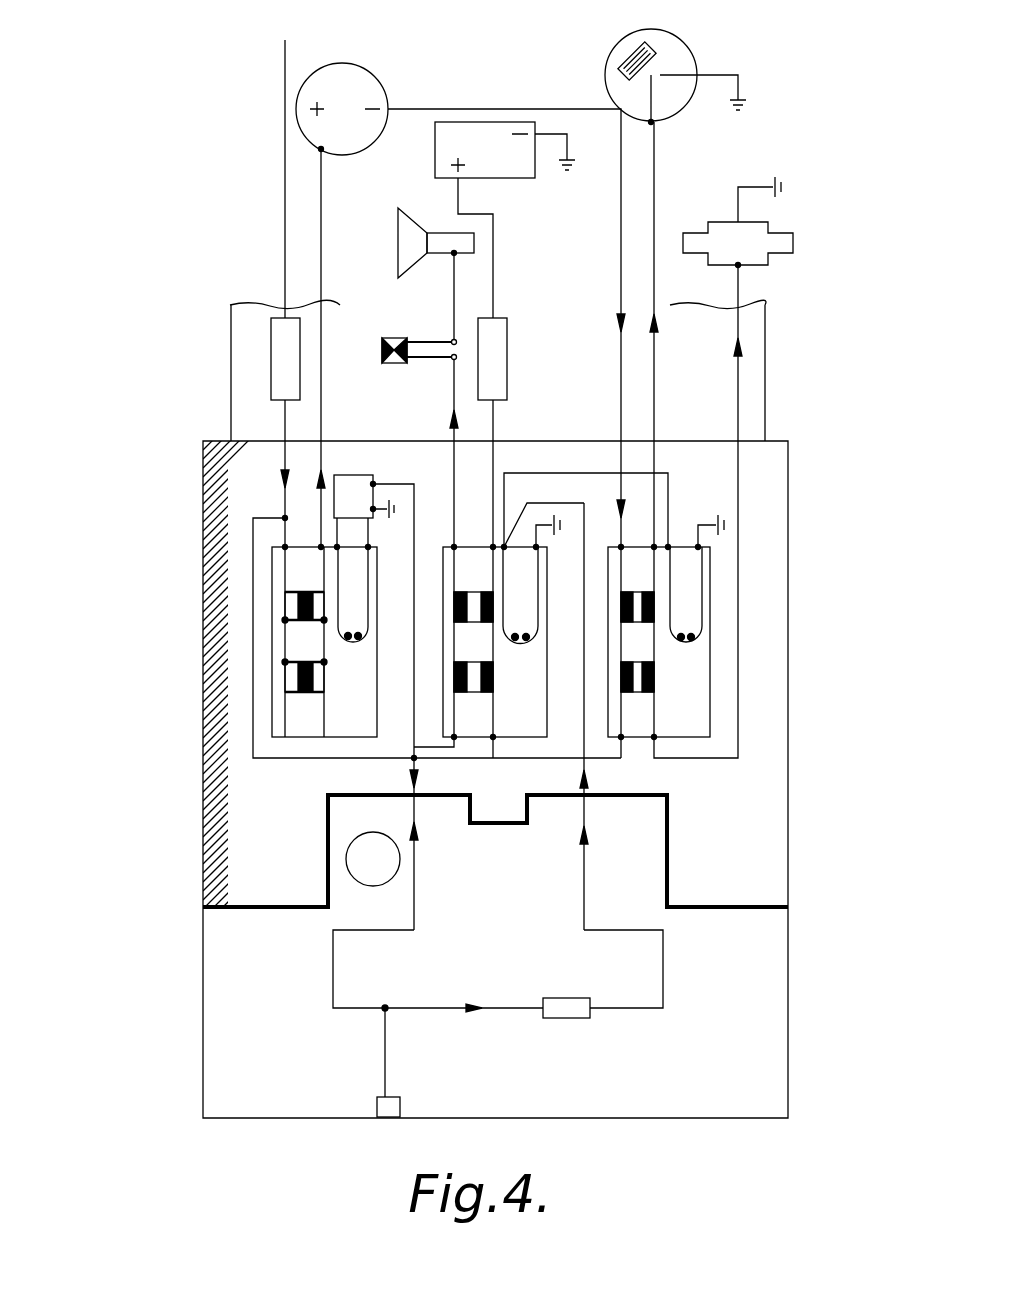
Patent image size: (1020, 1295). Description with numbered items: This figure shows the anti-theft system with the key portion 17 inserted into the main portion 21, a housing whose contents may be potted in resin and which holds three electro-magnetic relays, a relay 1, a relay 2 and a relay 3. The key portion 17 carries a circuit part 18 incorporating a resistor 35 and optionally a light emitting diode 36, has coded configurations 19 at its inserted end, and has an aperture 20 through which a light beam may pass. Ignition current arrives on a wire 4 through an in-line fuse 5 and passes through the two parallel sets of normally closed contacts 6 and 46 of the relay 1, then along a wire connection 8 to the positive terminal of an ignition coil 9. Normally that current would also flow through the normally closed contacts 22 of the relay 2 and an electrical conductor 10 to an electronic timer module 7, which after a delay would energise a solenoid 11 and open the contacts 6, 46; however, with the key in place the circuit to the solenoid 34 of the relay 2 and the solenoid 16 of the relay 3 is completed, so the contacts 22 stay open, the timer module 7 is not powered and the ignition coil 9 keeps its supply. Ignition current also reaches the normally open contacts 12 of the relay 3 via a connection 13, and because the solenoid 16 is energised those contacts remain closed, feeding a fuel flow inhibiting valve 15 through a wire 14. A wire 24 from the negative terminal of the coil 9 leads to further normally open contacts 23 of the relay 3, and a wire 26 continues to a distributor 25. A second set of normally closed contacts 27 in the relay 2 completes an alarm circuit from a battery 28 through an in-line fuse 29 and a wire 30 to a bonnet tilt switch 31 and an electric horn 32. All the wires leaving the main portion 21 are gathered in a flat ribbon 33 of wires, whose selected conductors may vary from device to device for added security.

The relay 1 is at (437, 651).
The relay 2 is at (557, 606).
The relay 3 is at (674, 625).
The wire 4 is at (281, 218).
The in-line fuse 5 is at (300, 360).
The normally closed contacts 6 is at (307, 560).
The electronic timer module 7 is at (360, 478).
The wire connection 8 is at (326, 218).
The ignition coil 9 is at (382, 85).
The electrical conductor 10 is at (414, 612).
The solenoid 11 is at (350, 645).
The normally open contacts 12 is at (640, 683).
The connection 13 is at (520, 762).
The wire 14 is at (738, 378).
The fuel flow inhibiting valve 15 is at (748, 247).
The solenoid 16 is at (686, 645).
The key portion 17 is at (203, 995).
The circuit part 18 is at (464, 1023).
The coded configurations 19 is at (505, 812).
The aperture 20 is at (360, 871).
The main portion 21 is at (203, 652).
The normally closed contacts 22 is at (478, 683).
The normally open contacts 23 is at (640, 562).
The wire 24 is at (618, 222).
The distributor 25 is at (606, 73).
The wire 26 is at (654, 215).
The normally closed contacts 27 is at (478, 562).
The battery 28 is at (520, 178).
The in-line fuse 29 is at (507, 363).
The wire 30 is at (452, 385).
The bonnet tilt switch 31 is at (395, 338).
The electric horn 32 is at (412, 225).
The ribbon of wires 33 is at (765, 378).
The solenoid 34 is at (522, 645).
The resistor 35 is at (563, 1000).
The light emitting diode 36 is at (377, 1105).
The normally closed contacts 46 is at (307, 700).